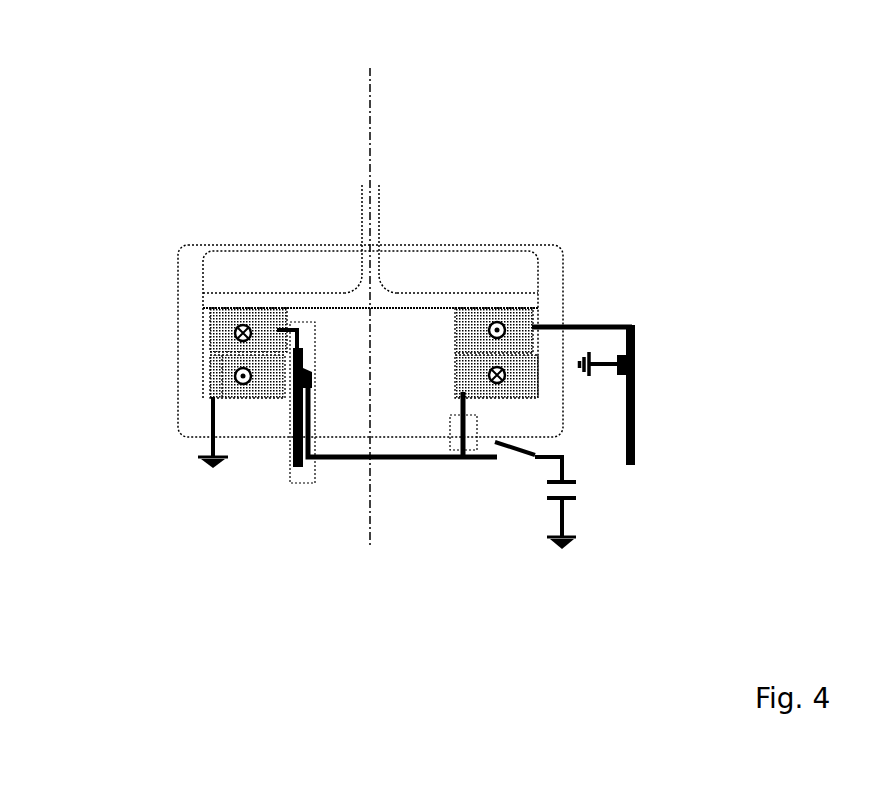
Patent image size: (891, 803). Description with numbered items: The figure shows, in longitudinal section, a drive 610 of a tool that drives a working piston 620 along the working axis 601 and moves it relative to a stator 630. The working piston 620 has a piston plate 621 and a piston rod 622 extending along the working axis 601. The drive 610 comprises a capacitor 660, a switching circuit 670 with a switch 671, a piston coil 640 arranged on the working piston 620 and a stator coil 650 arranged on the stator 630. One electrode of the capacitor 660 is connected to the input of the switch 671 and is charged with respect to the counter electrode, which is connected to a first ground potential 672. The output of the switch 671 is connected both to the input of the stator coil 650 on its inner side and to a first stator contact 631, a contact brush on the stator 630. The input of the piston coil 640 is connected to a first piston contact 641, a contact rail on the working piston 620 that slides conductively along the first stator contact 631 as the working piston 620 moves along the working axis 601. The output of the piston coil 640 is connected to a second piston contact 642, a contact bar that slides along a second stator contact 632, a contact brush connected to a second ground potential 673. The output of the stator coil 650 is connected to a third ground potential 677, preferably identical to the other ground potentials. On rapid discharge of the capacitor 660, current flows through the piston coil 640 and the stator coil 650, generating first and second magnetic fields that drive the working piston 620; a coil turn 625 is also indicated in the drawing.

The drive 610 is at (118, 95).
The working piston 620 is at (273, 132).
The working axis 601 is at (363, 94).
The piston plate 621 is at (298, 297).
The piston rod 622 is at (363, 230).
The coil winding 625 is at (460, 328).
The first stator contact 631 is at (313, 372).
The piston coil 640 is at (519, 323).
The stator coil 650 is at (523, 367).
The second stator contact 632 is at (619, 353).
The second ground potential 673 is at (588, 378).
The second piston contact 642 is at (633, 418).
The capacitor 660 is at (576, 493).
The first ground potential 672 is at (562, 552).
The switch 671 is at (520, 453).
The switching circuit 670 is at (432, 633).
The third ground potential 677 is at (213, 463).
The first piston contact 641 is at (298, 462).
The stator 630 is at (337, 413).